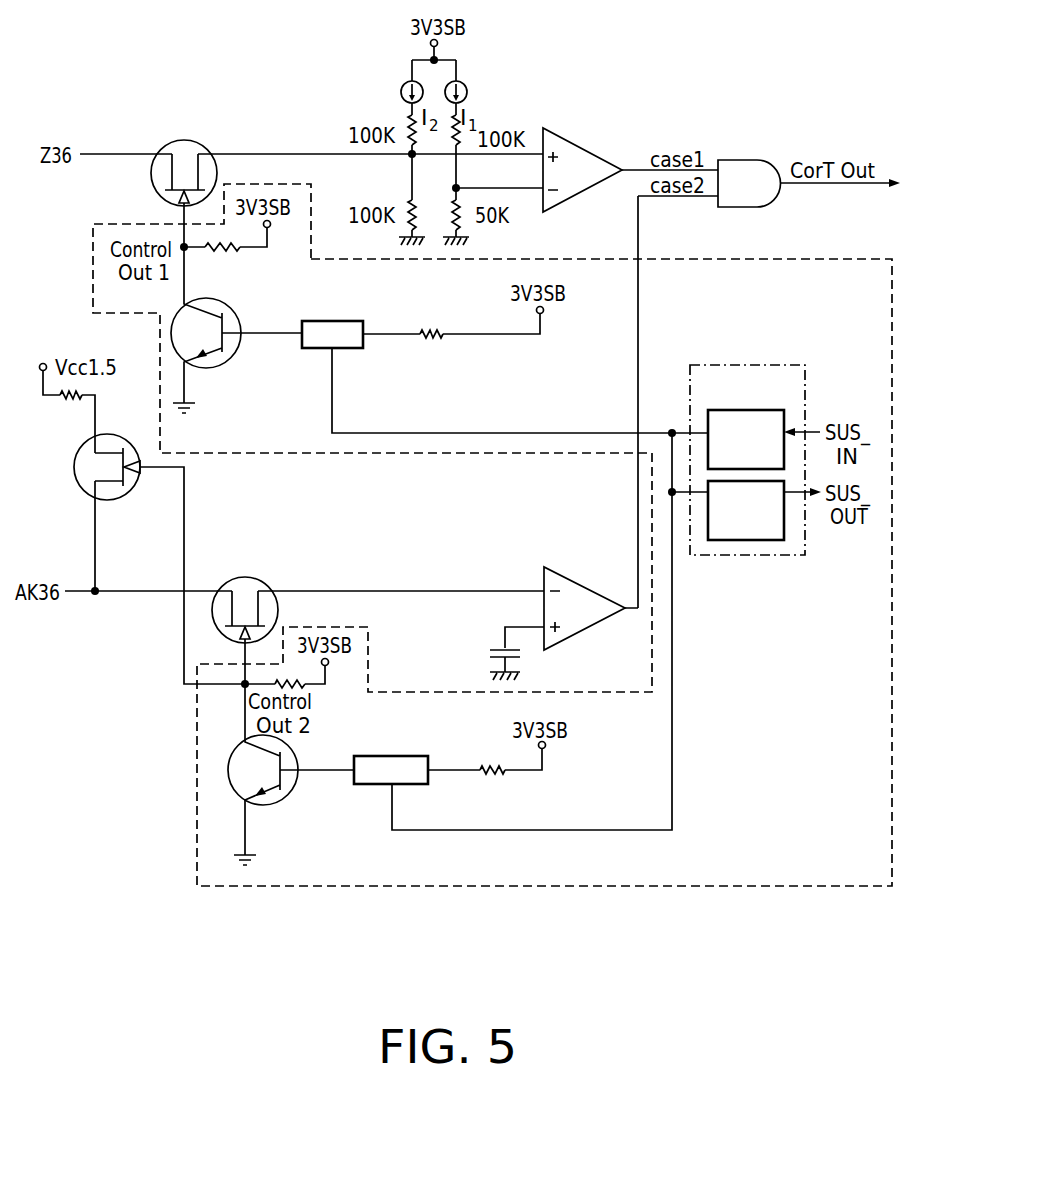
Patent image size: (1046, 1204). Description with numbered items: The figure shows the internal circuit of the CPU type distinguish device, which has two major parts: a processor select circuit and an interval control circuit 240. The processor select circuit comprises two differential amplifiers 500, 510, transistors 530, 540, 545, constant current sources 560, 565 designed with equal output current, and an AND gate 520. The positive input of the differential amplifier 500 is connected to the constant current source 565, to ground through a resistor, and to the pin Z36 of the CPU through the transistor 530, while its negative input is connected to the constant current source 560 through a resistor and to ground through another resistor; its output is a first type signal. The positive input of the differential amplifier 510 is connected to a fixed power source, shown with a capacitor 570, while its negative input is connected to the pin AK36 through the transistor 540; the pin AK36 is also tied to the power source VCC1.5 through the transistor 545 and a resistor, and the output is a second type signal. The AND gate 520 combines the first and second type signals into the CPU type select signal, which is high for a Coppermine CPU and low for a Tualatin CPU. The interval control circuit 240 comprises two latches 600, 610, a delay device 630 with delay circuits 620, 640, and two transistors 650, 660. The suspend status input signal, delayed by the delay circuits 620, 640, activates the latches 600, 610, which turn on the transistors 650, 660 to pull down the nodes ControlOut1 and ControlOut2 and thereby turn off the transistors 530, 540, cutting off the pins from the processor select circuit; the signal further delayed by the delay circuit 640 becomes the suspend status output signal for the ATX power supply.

The interval control circuit 240 is at (830, 258).
The differential amplifier 500 is at (585, 150).
The differential amplifier 510 is at (584, 586).
The AND gate 520 is at (738, 160).
The transistor 530 is at (185, 140).
The transistor 540 is at (248, 575).
The transistor 545 is at (75, 473).
The constant current source 560 is at (467, 88).
The constant current source 565 is at (404, 84).
The capacitor 570 is at (498, 648).
The latch 600 is at (330, 320).
The latch 610 is at (390, 756).
The delay circuit 620 is at (746, 410).
The delay device 630 is at (747, 449).
The delay circuit 640 is at (745, 540).
The transistor 650 is at (223, 362).
The transistor 660 is at (283, 797).